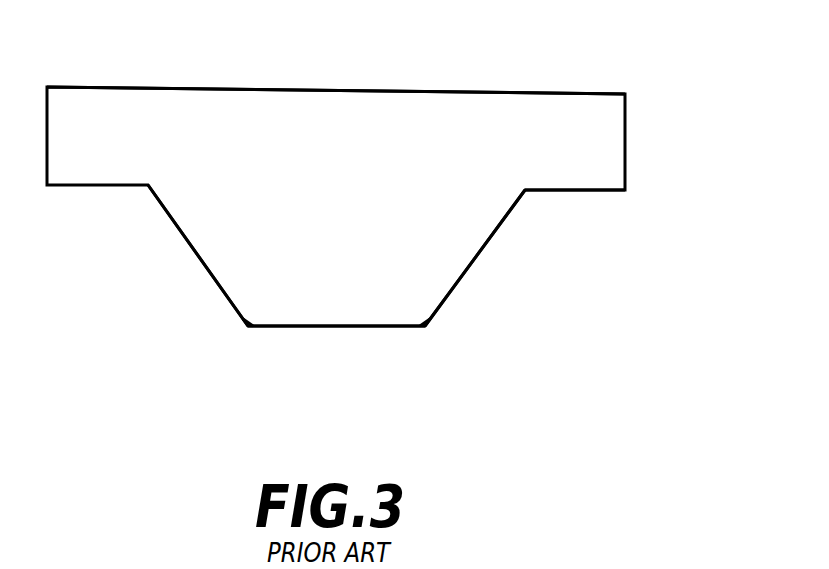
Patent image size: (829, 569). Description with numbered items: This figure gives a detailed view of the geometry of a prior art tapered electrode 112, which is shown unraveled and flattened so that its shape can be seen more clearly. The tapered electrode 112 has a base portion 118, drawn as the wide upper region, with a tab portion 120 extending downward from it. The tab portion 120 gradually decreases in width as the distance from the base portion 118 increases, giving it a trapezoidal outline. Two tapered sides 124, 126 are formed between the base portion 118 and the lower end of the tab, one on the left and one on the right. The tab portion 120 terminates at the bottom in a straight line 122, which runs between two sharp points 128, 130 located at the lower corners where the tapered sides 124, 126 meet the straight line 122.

The tapered electrode 112 is at (608, 54).
The base portion 118 is at (87, 103).
The tab portion 120 is at (473, 212).
The straight line 122 is at (330, 326).
The tapered side 124 is at (183, 233).
The tapered side 126 is at (470, 265).
The sharp point 128 is at (247, 327).
The sharp point 130 is at (427, 326).